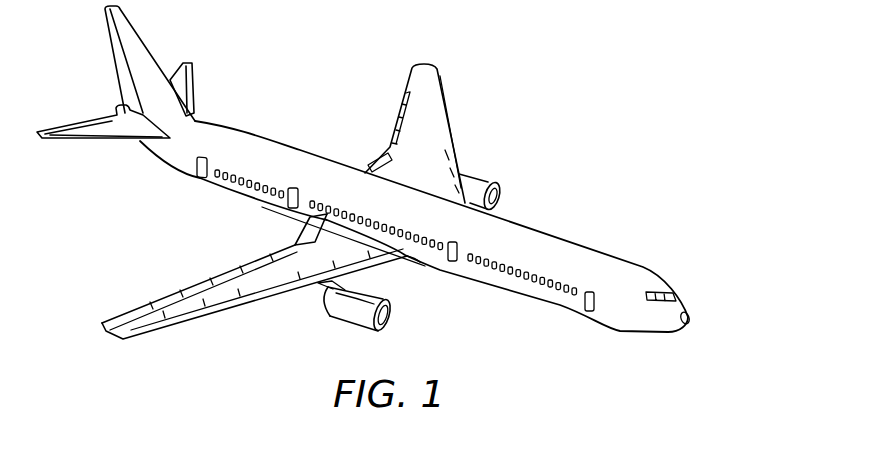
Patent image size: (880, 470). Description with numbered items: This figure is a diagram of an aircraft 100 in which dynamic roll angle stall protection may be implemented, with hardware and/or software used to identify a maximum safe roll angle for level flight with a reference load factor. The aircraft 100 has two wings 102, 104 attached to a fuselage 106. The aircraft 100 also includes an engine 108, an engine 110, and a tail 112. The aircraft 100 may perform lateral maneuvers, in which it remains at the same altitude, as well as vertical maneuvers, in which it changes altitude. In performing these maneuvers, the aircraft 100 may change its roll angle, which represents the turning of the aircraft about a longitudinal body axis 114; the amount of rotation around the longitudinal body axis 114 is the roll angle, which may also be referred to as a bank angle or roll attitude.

The aircraft 100 is at (613, 129).
The wing 102 is at (145, 318).
The wing 104 is at (423, 77).
The fuselage 106 is at (558, 298).
The engine 108 is at (348, 313).
The engine 110 is at (487, 183).
The tail 112 is at (83, 128).
The longitudinal body axis 114 is at (746, 340).